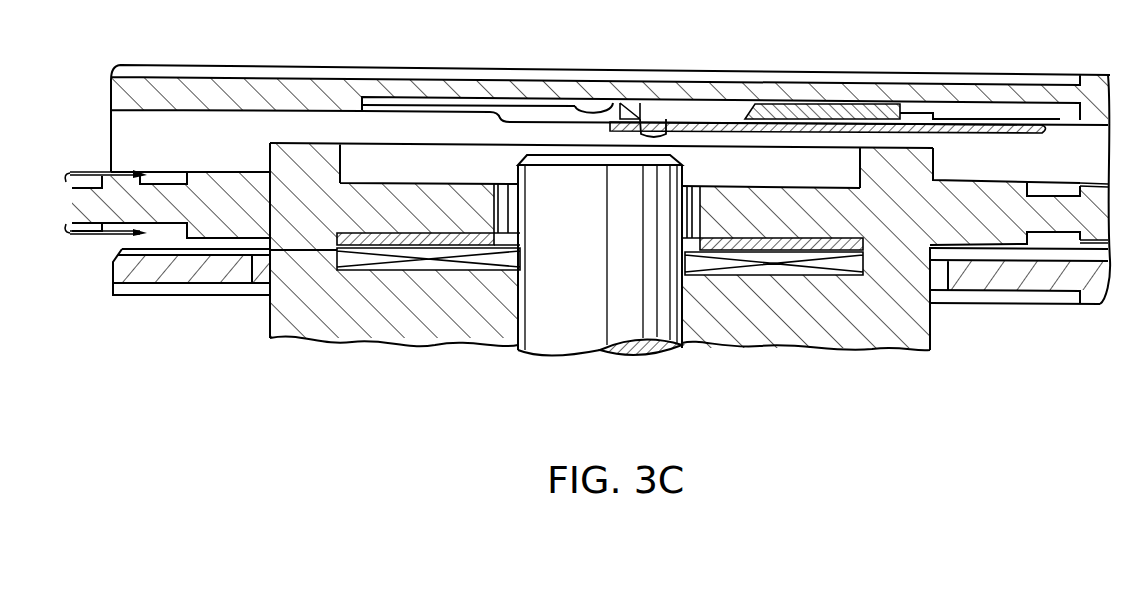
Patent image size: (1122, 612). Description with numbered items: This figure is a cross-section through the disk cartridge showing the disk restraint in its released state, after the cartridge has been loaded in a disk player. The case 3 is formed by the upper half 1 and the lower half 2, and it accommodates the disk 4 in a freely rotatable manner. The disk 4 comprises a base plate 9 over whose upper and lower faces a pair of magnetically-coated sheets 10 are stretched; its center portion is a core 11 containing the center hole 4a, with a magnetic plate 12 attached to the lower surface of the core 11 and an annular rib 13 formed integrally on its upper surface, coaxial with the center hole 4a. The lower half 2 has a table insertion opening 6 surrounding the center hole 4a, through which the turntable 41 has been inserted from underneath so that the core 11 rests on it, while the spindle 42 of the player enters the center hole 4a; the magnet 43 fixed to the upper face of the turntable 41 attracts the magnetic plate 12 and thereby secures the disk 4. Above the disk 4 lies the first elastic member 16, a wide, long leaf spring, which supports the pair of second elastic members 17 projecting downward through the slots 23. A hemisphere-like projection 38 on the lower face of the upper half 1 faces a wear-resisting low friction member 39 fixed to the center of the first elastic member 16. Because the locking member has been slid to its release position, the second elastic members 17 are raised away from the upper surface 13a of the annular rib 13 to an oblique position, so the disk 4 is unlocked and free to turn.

The upper half 1 is at (191, 88).
The lower half 2 is at (159, 268).
The case 3 is at (224, 42).
The disk 4 is at (134, 166).
The center hole 4a is at (700, 222).
The table insertion opening 6 is at (250, 273).
The base plate 9 is at (172, 207).
The magnetically-coated sheets 10 is at (70, 176).
The core 11 is at (805, 218).
The magnetic plate 12 is at (403, 246).
The annular rib 13 is at (323, 162).
The upper surface of the annular rib 13a is at (308, 141).
The first elastic member 16 is at (1000, 126).
The second elastic members 17 is at (651, 104).
The slots 23 is at (637, 106).
The hemisphere-like projection 38 is at (600, 107).
The low friction member 39 is at (840, 113).
The turntable 41 is at (913, 318).
The spindle 42 is at (683, 332).
The magnet 43 is at (482, 262).